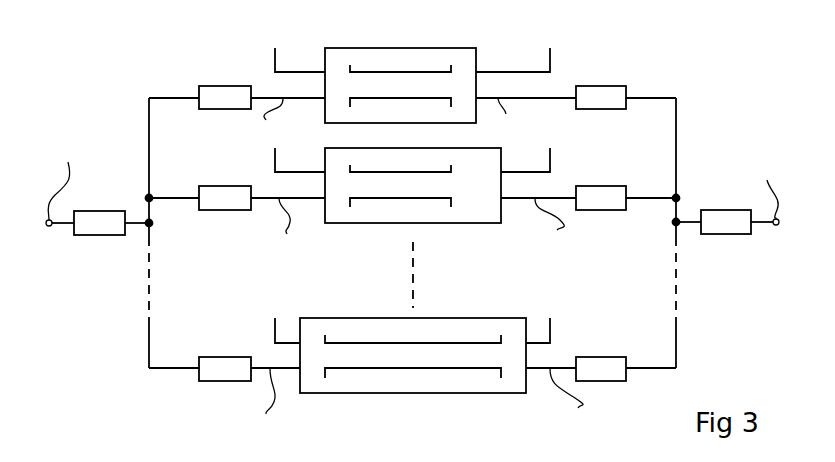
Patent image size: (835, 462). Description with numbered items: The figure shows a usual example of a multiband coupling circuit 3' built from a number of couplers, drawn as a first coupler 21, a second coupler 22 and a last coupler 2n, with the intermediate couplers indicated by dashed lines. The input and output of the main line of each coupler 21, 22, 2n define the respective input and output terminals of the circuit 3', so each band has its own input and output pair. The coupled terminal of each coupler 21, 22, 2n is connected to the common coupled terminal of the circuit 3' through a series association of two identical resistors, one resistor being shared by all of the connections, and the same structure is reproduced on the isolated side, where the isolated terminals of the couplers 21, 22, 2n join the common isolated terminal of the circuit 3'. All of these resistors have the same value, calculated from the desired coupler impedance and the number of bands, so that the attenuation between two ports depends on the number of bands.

The multiband coupling circuit 3' is at (414, 220).
The coupler 21 is at (403, 48).
The coupler 22 is at (397, 148).
The coupler 2n is at (450, 318).